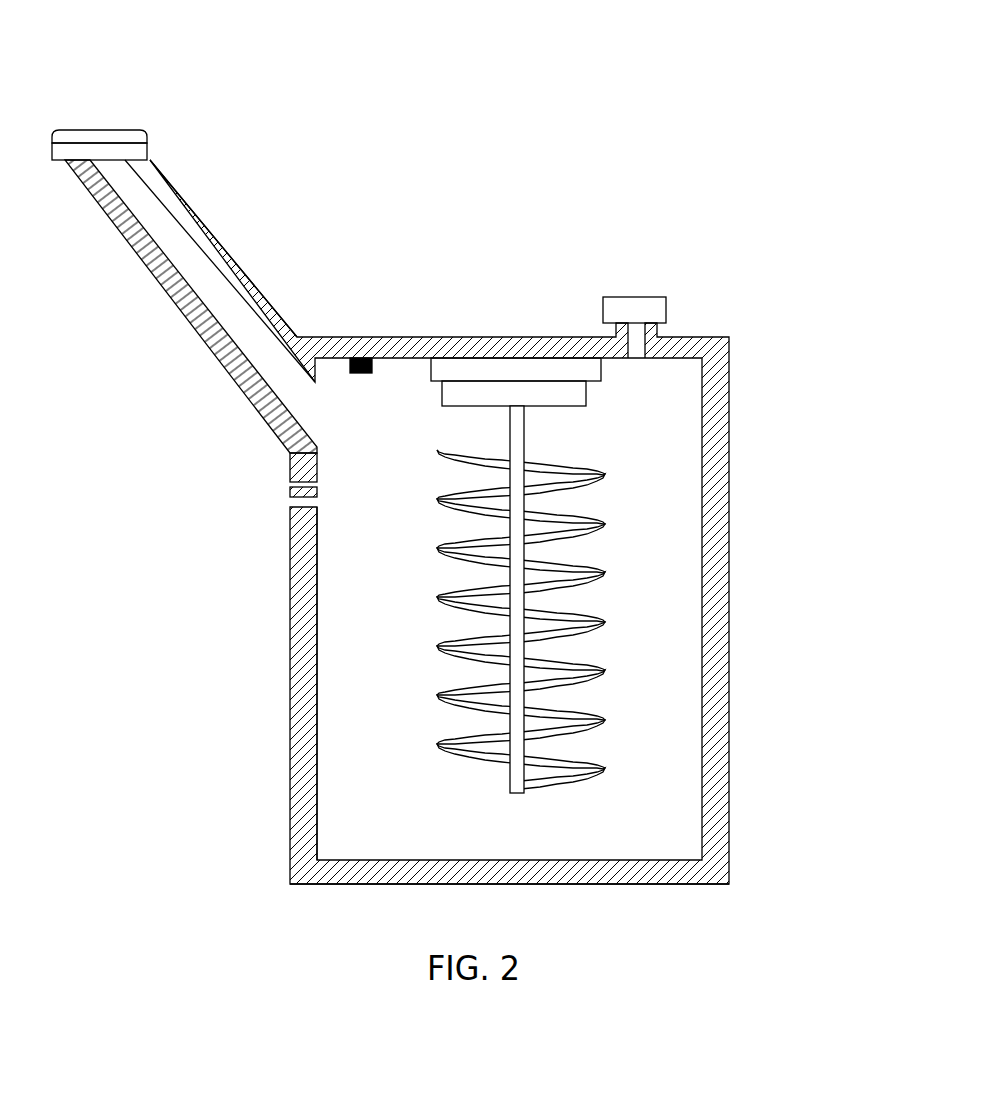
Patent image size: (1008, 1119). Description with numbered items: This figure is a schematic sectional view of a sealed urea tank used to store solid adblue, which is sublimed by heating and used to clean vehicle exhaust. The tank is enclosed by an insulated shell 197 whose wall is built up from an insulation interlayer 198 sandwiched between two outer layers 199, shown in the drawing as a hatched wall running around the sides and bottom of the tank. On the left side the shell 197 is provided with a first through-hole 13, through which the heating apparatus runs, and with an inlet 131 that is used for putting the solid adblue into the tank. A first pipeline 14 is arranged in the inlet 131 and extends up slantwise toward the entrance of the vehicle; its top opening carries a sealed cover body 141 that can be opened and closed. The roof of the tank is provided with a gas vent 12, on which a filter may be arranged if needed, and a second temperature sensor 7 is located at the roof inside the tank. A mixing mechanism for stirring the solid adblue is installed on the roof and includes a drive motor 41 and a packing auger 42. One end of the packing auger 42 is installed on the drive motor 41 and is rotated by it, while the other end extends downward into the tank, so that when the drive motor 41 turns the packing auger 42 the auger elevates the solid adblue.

The feed tube cap 141 is at (104, 135).
The first pipeline 14 is at (210, 313).
The inlet 131 is at (297, 398).
The first through-hole 13 is at (290, 502).
The second temperature sensor 7 is at (350, 358).
The gas vent 12 is at (632, 310).
The drive motor 41 is at (560, 398).
The packing auger 42 is at (563, 633).
The outer layers 199 is at (315, 688).
The insulation interlayer 198 is at (303, 789).
The insulated shell 197 is at (288, 868).